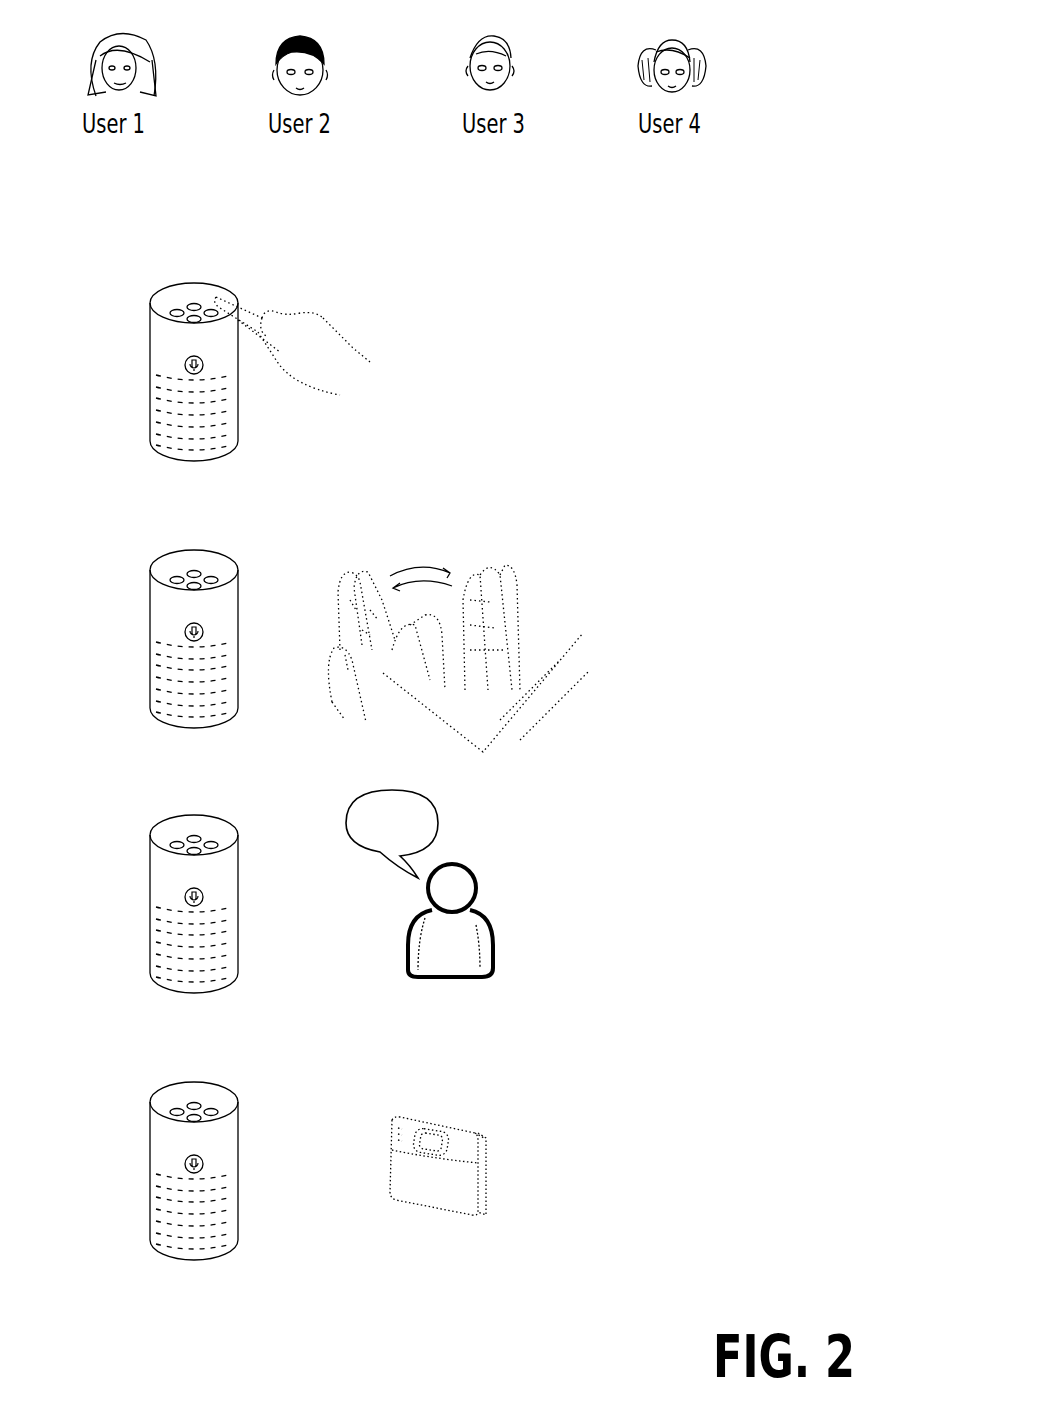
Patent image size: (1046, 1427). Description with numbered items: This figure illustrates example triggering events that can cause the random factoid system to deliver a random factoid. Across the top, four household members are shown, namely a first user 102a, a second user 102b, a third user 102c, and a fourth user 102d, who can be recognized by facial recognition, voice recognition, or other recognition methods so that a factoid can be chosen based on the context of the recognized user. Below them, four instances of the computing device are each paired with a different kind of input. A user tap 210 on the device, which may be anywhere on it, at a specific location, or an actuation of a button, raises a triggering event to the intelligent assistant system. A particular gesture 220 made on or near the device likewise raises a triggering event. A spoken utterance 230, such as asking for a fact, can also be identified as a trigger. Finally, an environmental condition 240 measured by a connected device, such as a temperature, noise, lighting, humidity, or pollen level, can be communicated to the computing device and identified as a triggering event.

The user 1 102a is at (143, 45).
The user 2 102b is at (328, 43).
The user 3 102c is at (512, 43).
The user 4 102d is at (712, 43).
The user tap 210 is at (323, 317).
The gesture 220 is at (528, 585).
The spoken utterance 230 is at (437, 813).
The environmental condition 240 is at (485, 1140).